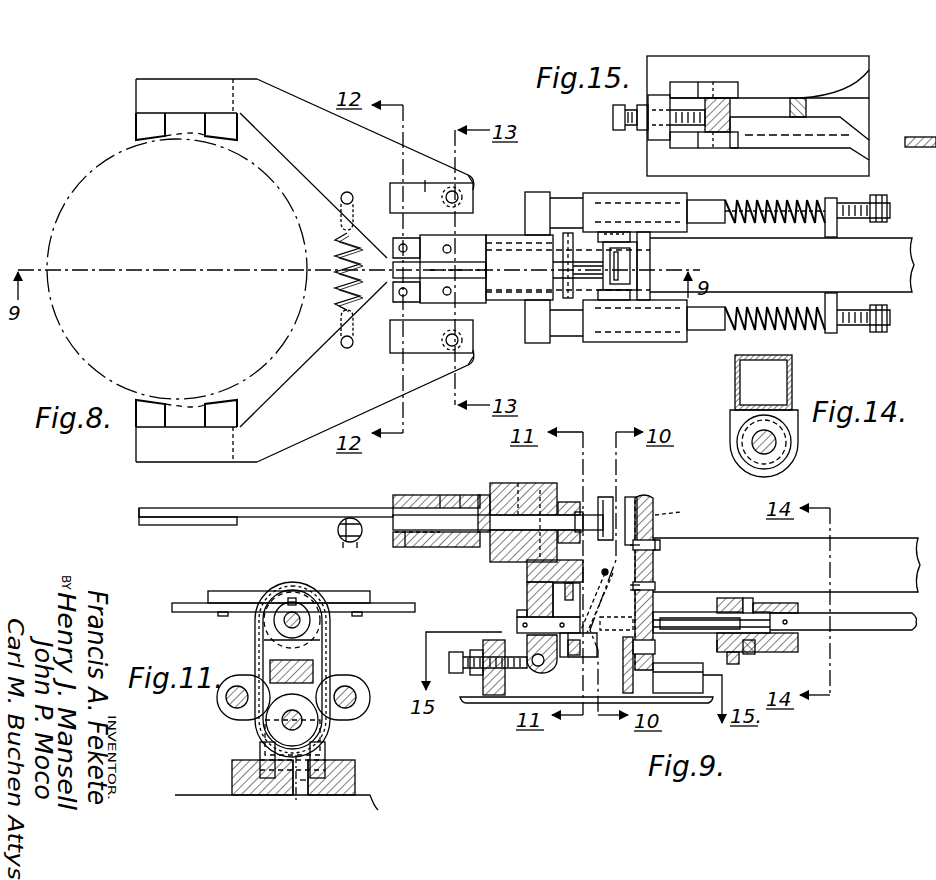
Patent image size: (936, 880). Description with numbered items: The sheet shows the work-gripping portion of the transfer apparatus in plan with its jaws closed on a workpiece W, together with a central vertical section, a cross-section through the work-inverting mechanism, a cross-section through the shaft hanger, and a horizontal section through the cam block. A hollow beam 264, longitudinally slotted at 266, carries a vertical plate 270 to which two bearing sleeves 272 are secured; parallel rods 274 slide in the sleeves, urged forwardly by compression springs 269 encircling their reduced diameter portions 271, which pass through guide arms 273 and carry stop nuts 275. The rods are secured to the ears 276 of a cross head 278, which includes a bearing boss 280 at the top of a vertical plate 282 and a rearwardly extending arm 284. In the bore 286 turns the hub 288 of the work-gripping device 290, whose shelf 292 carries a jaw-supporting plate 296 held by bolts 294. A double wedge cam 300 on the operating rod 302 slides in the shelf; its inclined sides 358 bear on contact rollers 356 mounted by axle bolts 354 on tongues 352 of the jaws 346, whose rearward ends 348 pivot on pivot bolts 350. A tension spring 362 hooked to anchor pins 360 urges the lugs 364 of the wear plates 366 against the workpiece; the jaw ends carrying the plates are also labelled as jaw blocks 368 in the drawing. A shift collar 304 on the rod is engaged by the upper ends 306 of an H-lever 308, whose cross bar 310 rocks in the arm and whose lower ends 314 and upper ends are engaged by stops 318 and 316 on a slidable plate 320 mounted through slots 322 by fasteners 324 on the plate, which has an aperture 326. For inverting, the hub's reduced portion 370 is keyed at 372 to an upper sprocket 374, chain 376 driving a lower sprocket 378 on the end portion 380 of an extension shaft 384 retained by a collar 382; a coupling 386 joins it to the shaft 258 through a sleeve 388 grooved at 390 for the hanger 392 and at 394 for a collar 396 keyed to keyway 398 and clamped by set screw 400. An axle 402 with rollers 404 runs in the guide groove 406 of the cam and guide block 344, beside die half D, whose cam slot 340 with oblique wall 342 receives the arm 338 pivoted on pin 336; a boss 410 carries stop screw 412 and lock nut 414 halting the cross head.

In FIG. 8, the workpiece W is at (78, 188).
In FIG. 8, the jaw block 368 is at (140, 103).
In FIG. 9, the jaw block 368 is at (172, 516).
In FIG. 8, the work gripping lugs 364 is at (150, 134).
In FIG. 8, the work-gripping jaws 346 is at (312, 100).
In FIG. 15, the work-gripping jaws 346 is at (922, 147).
In FIG. 9, the work-gripping jaws 346 is at (320, 508).
In FIG. 8, the rearward ends of the jaws 348 is at (470, 176).
In FIG. 8, the pivot bolts 350 is at (460, 194).
In FIG. 11, the pivot bolts 350 is at (222, 616).
In FIG. 8, the axle bolts 354 is at (392, 343).
In FIG. 8, the contact rollers 356 is at (398, 244).
In FIG. 9, the contact rollers 356 is at (395, 537).
In FIG. 8, the inclined converging opposite sides 358 is at (443, 248).
In FIG. 8, the tongues 352 is at (395, 258).
In FIG. 8, the grooved anchor pins 360 is at (347, 191).
In FIG. 9, the grooved anchor pins 360 is at (338, 528).
In FIG. 8, the tension spring 362 is at (330, 292).
In FIG. 9, the tension spring 362 is at (342, 538).
In FIG. 8, the double wedge cam 300 is at (433, 303).
In FIG. 9, the double wedge cam 300 is at (430, 548).
In FIG. 8, the jaw-supporting plate 296 is at (418, 178).
In FIG. 9, the jaw-supporting plate 296 is at (395, 497).
In FIG. 11, the jaw-supporting plate 296 is at (370, 597).
In FIG. 8, the bolts 294 is at (452, 250).
In FIG. 9, the bolts 294 is at (430, 495).
In FIG. 8, the bore 286 is at (568, 267).
In FIG. 9, the bore 286 is at (532, 498).
In FIG. 8, the cross head 278 is at (520, 238).
In FIG. 9, the cross head 278 is at (522, 482).
In FIG. 11, the cross head 278 is at (305, 716).
In FIG. 8, the bearing boss 280 is at (505, 300).
In FIG. 9, the bearing boss 280 is at (512, 483).
In FIG. 8, the operating rod 302 is at (483, 303).
In FIG. 9, the operating rod 302 is at (490, 522).
In FIG. 11, the operating rod 302 is at (300, 612).
In FIG. 8, the ears 276 is at (540, 192).
In FIG. 11, the ears 276 is at (220, 708).
In FIG. 8, the bearing sleeves 272 is at (622, 196).
In FIG. 8, the sprocket chain 376 is at (568, 233).
In FIG. 11, the sprocket chain 376 is at (330, 648).
In FIG. 8, the upper stops 316 is at (612, 236).
In FIG. 9, the upper stops 316 is at (606, 496).
In FIG. 8, the shift collar 304 is at (628, 270).
In FIG. 9, the shift collar 304 is at (632, 496).
In FIG. 8, the vertical plate 270 is at (652, 258).
In FIG. 9, the vertical plate 270 is at (660, 520).
In FIG. 8, the hollow beam 264 is at (900, 240).
In FIG. 14, the hollow beam 264 is at (736, 388).
In FIG. 9, the hollow beam 264 is at (888, 540).
In FIG. 8, the rods 274 is at (703, 206).
In FIG. 11, the rods 274 is at (226, 697).
In FIG. 8, the reduced diameter portions 271 is at (770, 205).
In FIG. 8, the compression springs 269 is at (790, 205).
In FIG. 8, the guide arms 273 is at (832, 204).
In FIG. 8, the stop nuts 275 is at (888, 205).
In FIG. 15, the combination cam and guide block 344 is at (872, 64).
In FIG. 11, the combination cam and guide block 344 is at (358, 780).
In FIG. 15, the oblique end wall 342 is at (850, 125).
In FIG. 15, the cam slot 340 is at (750, 105).
In FIG. 11, the cam slot 340 is at (305, 800).
In FIG. 15, the guide groove 406 is at (788, 150).
In FIG. 11, the guide groove 406 is at (235, 768).
In FIG. 15, the rollers 404 is at (738, 90).
In FIG. 9, the rollers 404 is at (572, 660).
In FIG. 11, the rollers 404 is at (260, 750).
In FIG. 15, the vertical plate of the cross head 282 is at (730, 118).
In FIG. 9, the vertical plate of the cross head 282 is at (526, 604).
In FIG. 11, the vertical plate of the cross head 282 is at (296, 800).
In FIG. 15, the axle 402 is at (700, 152).
In FIG. 9, the axle 402 is at (536, 668).
In FIG. 11, the axle 402 is at (335, 768).
In FIG. 15, the round-ended arm 338 is at (808, 108).
In FIG. 9, the round-ended arm 338 is at (660, 704).
In FIG. 15, the upstanding boss 410 is at (652, 137).
In FIG. 9, the upstanding boss 410 is at (483, 645).
In FIG. 15, the stop screw 412 is at (612, 118).
In FIG. 9, the stop screw 412 is at (458, 678).
In FIG. 15, the lock nut 414 is at (641, 106).
In FIG. 9, the lock nut 414 is at (476, 676).
In FIG. 14, the longitudinal slot 266 is at (792, 382).
In FIG. 14, the shaft hanger 392 is at (790, 455).
In FIG. 9, the shaft hanger 392 is at (749, 654).
In FIG. 14, the coupling sleeve 388 is at (790, 436).
In FIG. 9, the coupling sleeve 388 is at (796, 603).
In FIG. 14, the shaft 258 is at (775, 444).
In FIG. 9, the shaft 258 is at (882, 630).
In FIG. 9, the wear plates 366 is at (152, 525).
In FIG. 9, the work-gripping device 290 is at (462, 494).
In FIG. 9, the hub 288 is at (486, 492).
In FIG. 9, the shelf 292 is at (415, 548).
In FIG. 9, the key connection 372 is at (565, 500).
In FIG. 11, the key connection 372 is at (292, 598).
In FIG. 9, the reduced diameter portion of the hub 370 is at (590, 532).
In FIG. 11, the reduced diameter portion of the hub 370 is at (288, 602).
In FIG. 9, the vertically-slidable plate 320 is at (645, 502).
In FIG. 9, the upper ends of the H-lever 306 is at (660, 516).
In FIG. 9, the vertical slots 322 is at (660, 540).
In FIG. 9, the fasteners 324 is at (660, 548).
In FIG. 9, the H-lever 308 is at (655, 565).
In FIG. 9, the aperture 326 is at (655, 598).
In FIG. 9, the internal groove 394 is at (730, 597).
In FIG. 9, the external annular groove 390 is at (750, 598).
In FIG. 9, the collar 396 is at (712, 620).
In FIG. 9, the keyway 398 is at (720, 652).
In FIG. 9, the set screw 400 is at (738, 664).
In FIG. 9, the driving coupling 386 is at (775, 650).
In FIG. 9, the arm 284 is at (530, 570).
In FIG. 11, the arm 284 is at (270, 668).
In FIG. 9, the cross bar 310 is at (604, 601).
In FIG. 9, the lower stops 318 is at (616, 616).
In FIG. 9, the reduced diameter forward end portion 380 is at (517, 624).
In FIG. 9, the lower sprocket 378 is at (553, 600).
In FIG. 9, the retaining collar 382 is at (517, 613).
In FIG. 9, the lower ends of the H-lever 314 is at (593, 646).
In FIG. 9, the pivot pin 336 is at (636, 668).
In FIG. 9, the extension shaft 384 is at (652, 662).
In FIG. 11, the extension shaft 384 is at (325, 726).
In FIG. 11, the upper sprocket 374 is at (264, 628).
In FIG. 11, the die half D is at (381, 807).